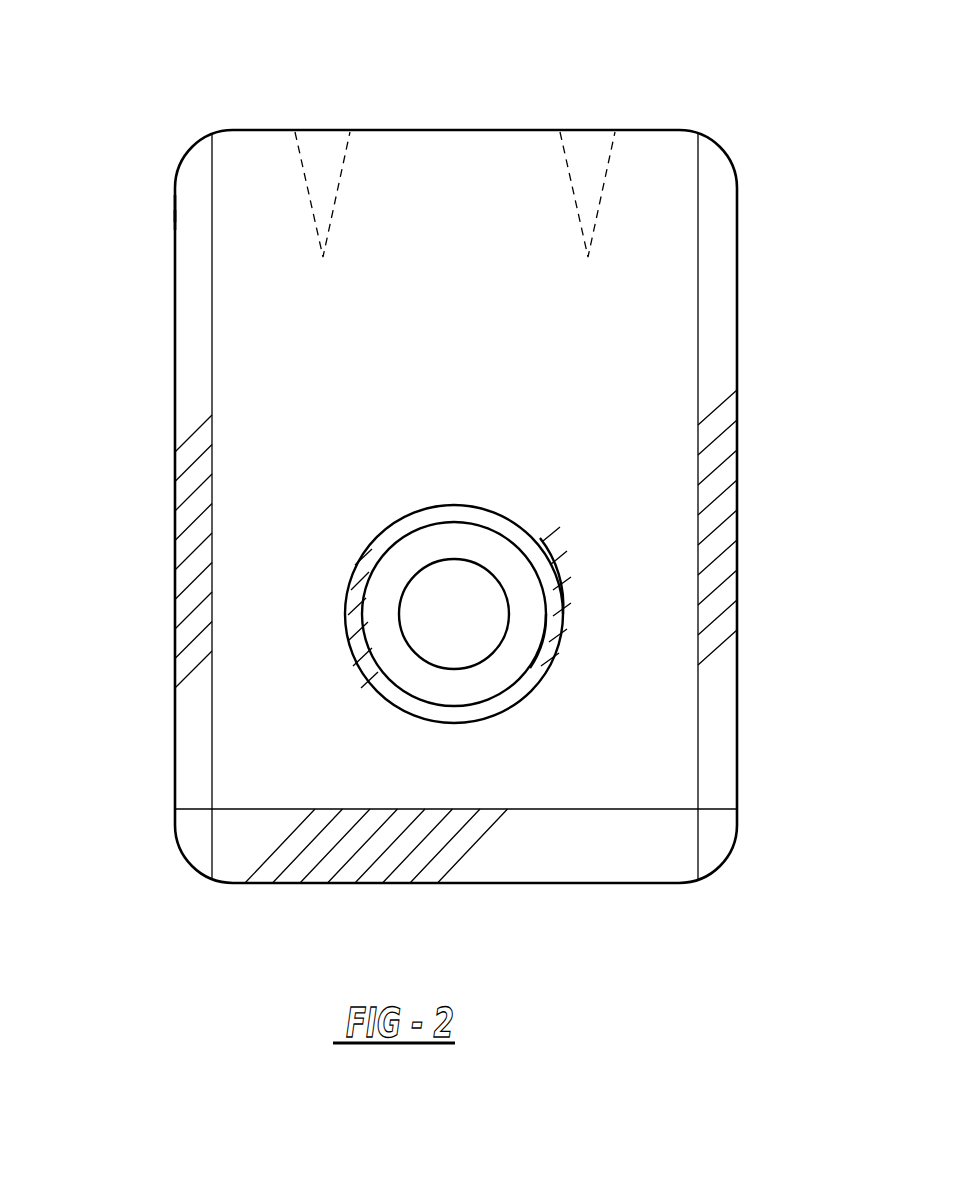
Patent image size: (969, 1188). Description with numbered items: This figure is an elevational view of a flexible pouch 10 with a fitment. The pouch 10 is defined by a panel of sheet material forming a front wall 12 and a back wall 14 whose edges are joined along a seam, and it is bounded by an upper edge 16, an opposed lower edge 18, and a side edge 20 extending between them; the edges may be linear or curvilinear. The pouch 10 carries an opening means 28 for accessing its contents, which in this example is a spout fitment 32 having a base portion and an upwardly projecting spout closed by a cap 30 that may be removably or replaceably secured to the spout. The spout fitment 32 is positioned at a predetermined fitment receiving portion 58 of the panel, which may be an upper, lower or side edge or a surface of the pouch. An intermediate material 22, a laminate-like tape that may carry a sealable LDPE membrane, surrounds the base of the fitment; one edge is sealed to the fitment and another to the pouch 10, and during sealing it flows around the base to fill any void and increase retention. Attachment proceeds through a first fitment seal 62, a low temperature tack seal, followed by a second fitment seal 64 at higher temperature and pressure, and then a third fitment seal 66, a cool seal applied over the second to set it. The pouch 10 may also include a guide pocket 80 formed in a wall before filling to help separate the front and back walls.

The flexible pouch 10 is at (711, 51).
The front wall 12 is at (653, 757).
The back wall 14 is at (737, 768).
The upper edge 16 is at (408, 130).
The lower edge 18 is at (632, 868).
The side edge 20 is at (212, 568).
The intermediate material 22 is at (440, 537).
The opening means 28 is at (171, 208).
The cap 30 is at (193, 168).
The spout fitment 32 is at (482, 583).
The fitment receiving portion 58 is at (537, 687).
The first fitment seal 62 is at (543, 563).
The second fitment seal 64 is at (557, 572).
The third fitment seal 66 is at (557, 623).
The guide pocket 80 is at (325, 157).